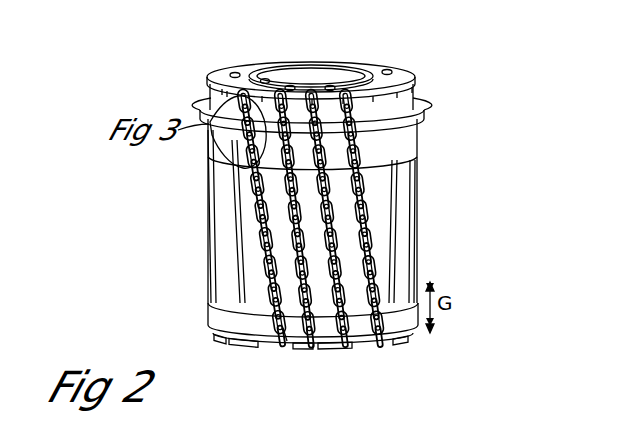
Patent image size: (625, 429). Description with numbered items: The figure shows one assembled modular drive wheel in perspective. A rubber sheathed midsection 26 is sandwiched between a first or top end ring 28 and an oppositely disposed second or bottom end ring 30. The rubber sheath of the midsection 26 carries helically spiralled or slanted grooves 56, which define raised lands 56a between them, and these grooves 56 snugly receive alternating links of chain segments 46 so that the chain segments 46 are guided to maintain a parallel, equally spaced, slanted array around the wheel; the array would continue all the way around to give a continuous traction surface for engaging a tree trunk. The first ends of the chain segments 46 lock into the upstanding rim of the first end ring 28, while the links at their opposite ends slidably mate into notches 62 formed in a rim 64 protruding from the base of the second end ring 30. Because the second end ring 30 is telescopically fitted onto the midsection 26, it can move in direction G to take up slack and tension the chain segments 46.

The midsection 26 is at (182, 217).
The first end ring 28 is at (405, 98).
The second end ring 30 is at (196, 317).
The chain segments 46 is at (248, 193).
The grooves 56 is at (237, 268).
The raised lands 56a is at (232, 252).
The notches 62 is at (289, 337).
The rim 64 is at (225, 340).